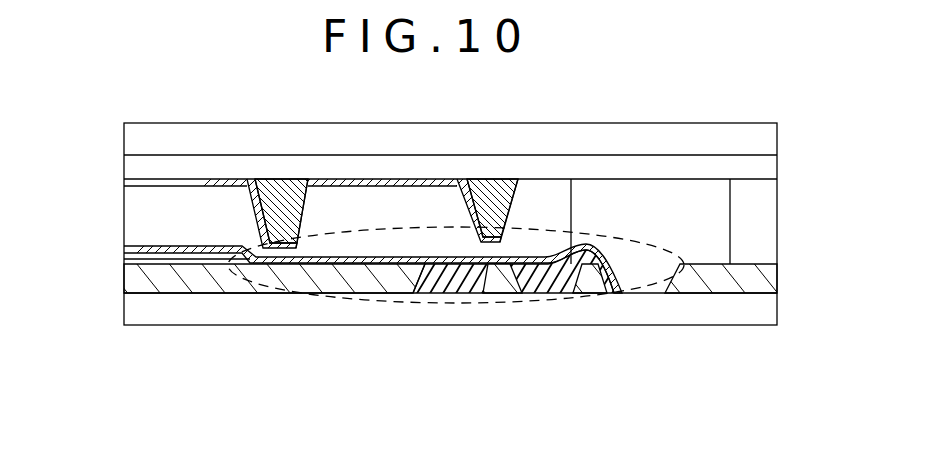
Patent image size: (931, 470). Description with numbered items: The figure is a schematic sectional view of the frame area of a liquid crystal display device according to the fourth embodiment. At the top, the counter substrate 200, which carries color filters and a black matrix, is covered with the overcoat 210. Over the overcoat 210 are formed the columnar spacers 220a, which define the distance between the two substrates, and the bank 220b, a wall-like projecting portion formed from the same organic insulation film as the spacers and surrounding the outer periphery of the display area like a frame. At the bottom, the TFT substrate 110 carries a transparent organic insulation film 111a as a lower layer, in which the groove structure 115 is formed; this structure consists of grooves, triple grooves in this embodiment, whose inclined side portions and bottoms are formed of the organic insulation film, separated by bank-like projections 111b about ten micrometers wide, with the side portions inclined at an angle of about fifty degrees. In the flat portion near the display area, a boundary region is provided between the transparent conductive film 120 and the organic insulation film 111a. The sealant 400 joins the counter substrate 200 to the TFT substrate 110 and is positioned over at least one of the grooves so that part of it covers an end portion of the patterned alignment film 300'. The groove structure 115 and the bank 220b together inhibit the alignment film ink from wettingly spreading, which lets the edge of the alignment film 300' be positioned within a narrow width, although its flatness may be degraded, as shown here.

The counter substrate 200 is at (132, 142).
The overcoat 210 is at (133, 168).
The columnar spacers 220a is at (277, 183).
The bank 220b is at (497, 182).
The sealant 400 is at (712, 200).
The groove structure 115 is at (345, 232).
The alignment film 300' is at (245, 222).
The transparent conductive film 120 is at (127, 252).
The bank-like projection 111b is at (600, 280).
The transparent organic insulation film 111a is at (137, 278).
The TFT substrate 110 is at (133, 310).